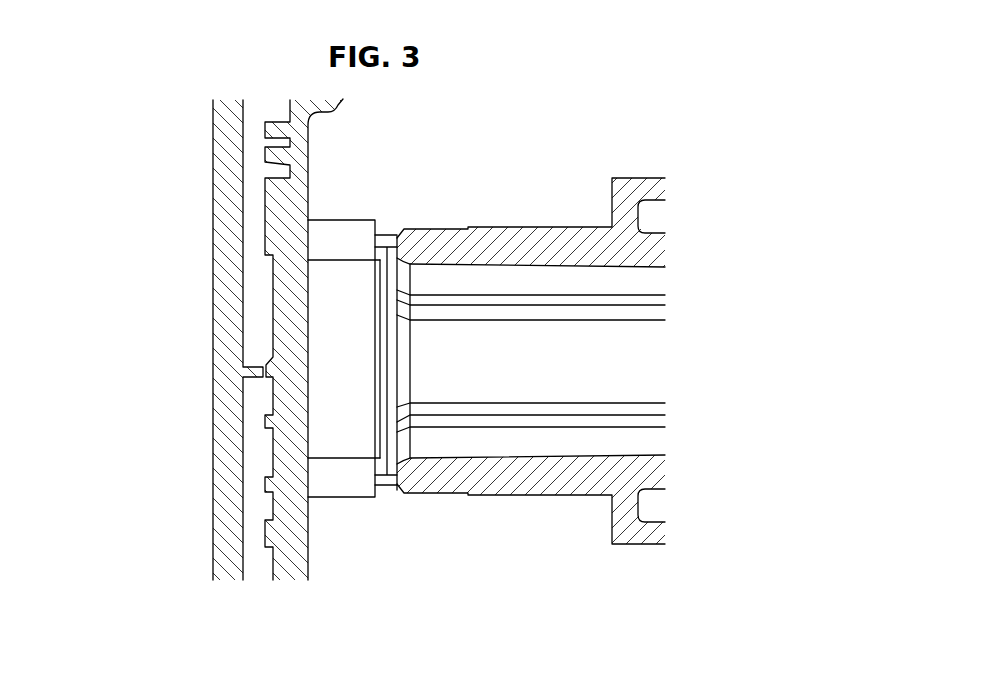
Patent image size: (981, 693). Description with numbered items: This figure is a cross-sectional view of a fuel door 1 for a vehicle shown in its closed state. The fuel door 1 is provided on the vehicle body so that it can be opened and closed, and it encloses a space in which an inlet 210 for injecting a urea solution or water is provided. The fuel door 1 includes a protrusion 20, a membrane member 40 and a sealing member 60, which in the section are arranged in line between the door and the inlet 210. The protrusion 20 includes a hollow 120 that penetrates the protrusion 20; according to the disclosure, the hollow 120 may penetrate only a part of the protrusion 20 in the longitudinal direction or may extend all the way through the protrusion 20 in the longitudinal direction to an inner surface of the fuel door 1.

The fuel door 1 is at (196, 295).
The protrusion 20 is at (343, 490).
The membrane member 40 is at (380, 282).
The sealing member 60 is at (388, 242).
The hollow 120 is at (338, 406).
The inlet 210 is at (443, 244).